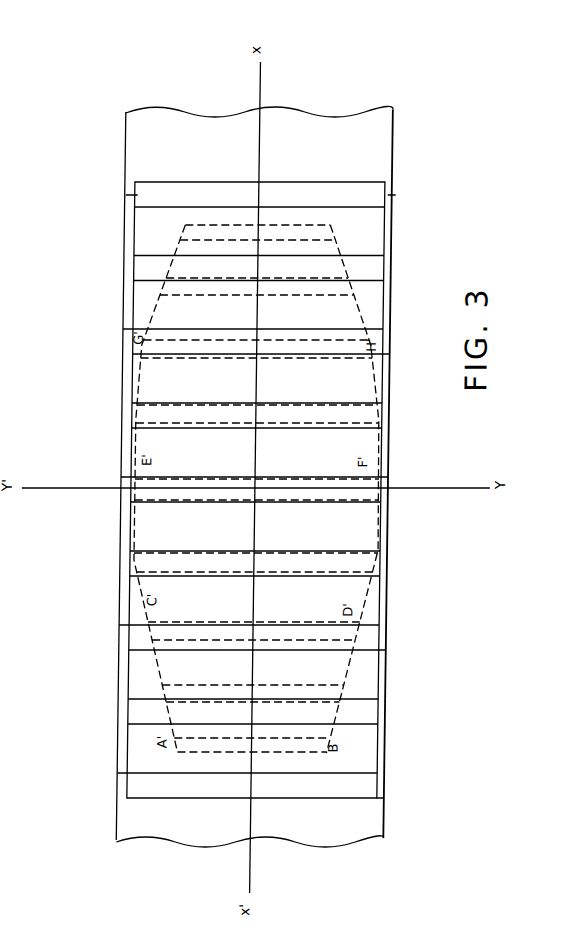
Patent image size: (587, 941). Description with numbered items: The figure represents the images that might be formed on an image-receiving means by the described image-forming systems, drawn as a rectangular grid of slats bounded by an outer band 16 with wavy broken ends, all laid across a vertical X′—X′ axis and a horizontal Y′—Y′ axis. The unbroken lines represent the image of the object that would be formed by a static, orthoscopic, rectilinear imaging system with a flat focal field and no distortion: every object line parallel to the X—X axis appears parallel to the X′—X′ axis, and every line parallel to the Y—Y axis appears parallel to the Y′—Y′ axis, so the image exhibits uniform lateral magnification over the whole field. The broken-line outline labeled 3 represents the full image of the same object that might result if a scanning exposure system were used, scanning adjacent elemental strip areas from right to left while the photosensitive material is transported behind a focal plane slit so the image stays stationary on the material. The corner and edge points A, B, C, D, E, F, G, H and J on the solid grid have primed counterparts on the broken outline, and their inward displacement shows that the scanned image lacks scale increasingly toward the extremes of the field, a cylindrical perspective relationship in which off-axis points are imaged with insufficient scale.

The continuous sheet or band 16 is at (152, 152).
The projected slat outline 3 is at (256, 489).
The reference point A is at (116, 781).
The reference point B is at (381, 790).
The reference point C is at (118, 633).
The reference point D is at (383, 642).
The reference point E is at (120, 478).
The reference point F is at (385, 479).
The reference point G is at (120, 336).
The reference point H is at (389, 347).
The reference point J is at (264, 197).